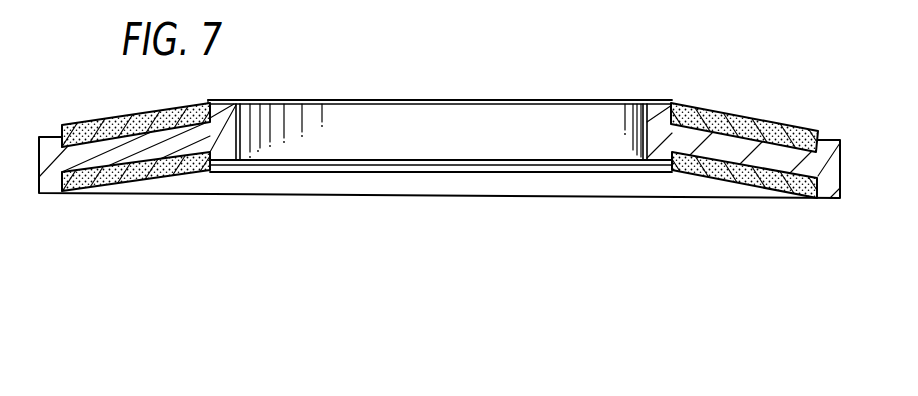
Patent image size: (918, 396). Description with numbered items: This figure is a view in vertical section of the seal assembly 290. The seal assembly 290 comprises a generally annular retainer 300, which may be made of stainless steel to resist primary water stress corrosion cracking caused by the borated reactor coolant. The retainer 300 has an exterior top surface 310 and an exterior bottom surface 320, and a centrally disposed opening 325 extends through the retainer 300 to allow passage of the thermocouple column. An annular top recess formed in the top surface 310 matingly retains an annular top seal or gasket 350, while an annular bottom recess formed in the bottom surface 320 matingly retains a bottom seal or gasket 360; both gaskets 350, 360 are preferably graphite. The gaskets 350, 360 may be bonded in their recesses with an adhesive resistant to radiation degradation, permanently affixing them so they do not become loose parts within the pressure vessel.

The seal assembly 290 is at (615, 78).
The retainer 300 is at (117, 157).
The exterior top surface 310 is at (47, 136).
The exterior bottom surface 320 is at (48, 195).
The centrally disposed opening 325 is at (633, 161).
The top seal or gasket 350 is at (742, 122).
The bottom seal or gasket 360 is at (761, 191).